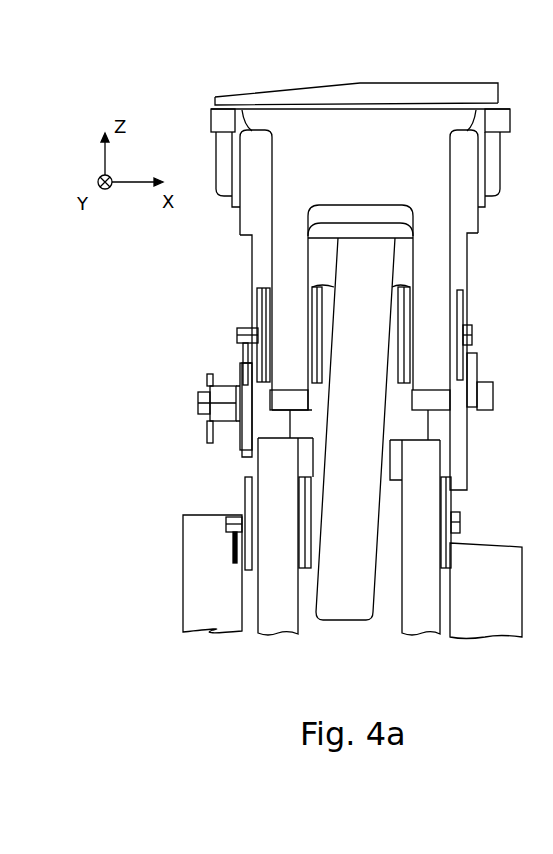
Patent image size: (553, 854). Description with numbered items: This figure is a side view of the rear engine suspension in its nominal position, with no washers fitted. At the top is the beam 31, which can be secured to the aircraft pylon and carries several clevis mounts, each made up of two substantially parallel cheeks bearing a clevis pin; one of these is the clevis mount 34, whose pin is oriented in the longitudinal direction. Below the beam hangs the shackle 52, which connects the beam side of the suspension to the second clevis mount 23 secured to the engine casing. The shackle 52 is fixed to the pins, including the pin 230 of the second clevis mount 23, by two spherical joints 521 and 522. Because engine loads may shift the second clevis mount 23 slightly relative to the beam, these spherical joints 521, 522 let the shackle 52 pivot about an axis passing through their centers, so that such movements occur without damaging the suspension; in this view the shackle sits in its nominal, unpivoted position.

The beam 31 is at (398, 132).
The clevis mount 34 is at (462, 322).
The shackle 52 is at (343, 438).
The spherical joint 521 is at (325, 325).
The spherical joint 522 is at (317, 520).
The second clevis mount 23 is at (275, 605).
The clevis pin 230 is at (452, 555).